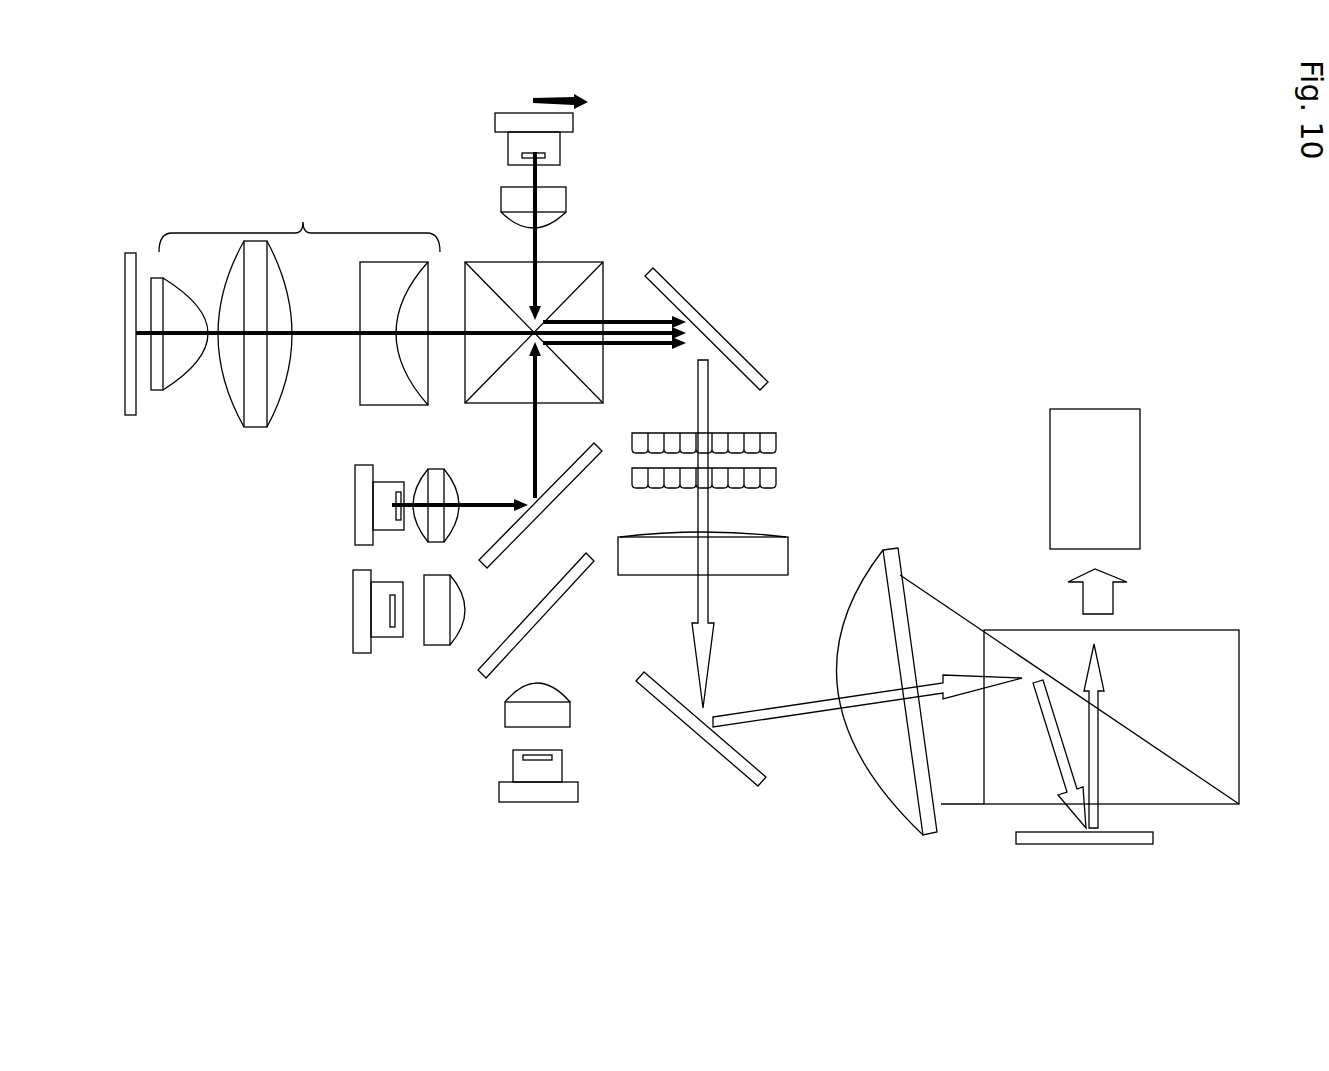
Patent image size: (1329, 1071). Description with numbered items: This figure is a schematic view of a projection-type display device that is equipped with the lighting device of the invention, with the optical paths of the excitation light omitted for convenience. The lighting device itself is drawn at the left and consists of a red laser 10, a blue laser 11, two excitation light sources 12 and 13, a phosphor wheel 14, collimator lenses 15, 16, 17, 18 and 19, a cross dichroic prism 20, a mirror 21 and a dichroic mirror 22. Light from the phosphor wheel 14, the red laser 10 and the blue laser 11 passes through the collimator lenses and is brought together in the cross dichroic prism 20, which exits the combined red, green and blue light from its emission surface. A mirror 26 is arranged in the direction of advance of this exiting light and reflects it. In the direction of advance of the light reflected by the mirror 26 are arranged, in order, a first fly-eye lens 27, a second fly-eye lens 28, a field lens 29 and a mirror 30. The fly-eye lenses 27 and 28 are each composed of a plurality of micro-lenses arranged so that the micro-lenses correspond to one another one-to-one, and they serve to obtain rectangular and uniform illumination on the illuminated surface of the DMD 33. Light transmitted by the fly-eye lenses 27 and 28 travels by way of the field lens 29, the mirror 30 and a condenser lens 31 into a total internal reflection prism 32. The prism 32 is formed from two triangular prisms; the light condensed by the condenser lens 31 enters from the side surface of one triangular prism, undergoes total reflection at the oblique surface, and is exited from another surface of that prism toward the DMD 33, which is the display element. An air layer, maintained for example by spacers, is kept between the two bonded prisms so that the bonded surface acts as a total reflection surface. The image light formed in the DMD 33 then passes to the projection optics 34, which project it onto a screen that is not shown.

The red laser 10 is at (348, 523).
The blue laser 11 is at (573, 122).
The excitation light source 12 is at (347, 628).
The excitation light source 13 is at (498, 787).
The phosphor wheel 14 is at (136, 253).
The collimator lens 15 is at (295, 311).
The collimator lens 16 is at (440, 468).
The collimator lens 17 is at (567, 186).
The collimator lens 18 is at (427, 642).
The collimator lens 19 is at (505, 705).
The cross dichroic prism 20 is at (585, 262).
The mirror 21 is at (480, 675).
The dichroic mirror 22 is at (593, 443).
The mirror 26 is at (742, 356).
The fly-eye lens 27 is at (777, 435).
The fly-eye lens 28 is at (777, 468).
The field lens 29 is at (782, 535).
The mirror 30 is at (722, 747).
The condenser lens 31 is at (890, 548).
The total internal reflection prism 32 is at (1144, 629).
The DMD 33 is at (1016, 838).
The projection optics 34 is at (1115, 407).